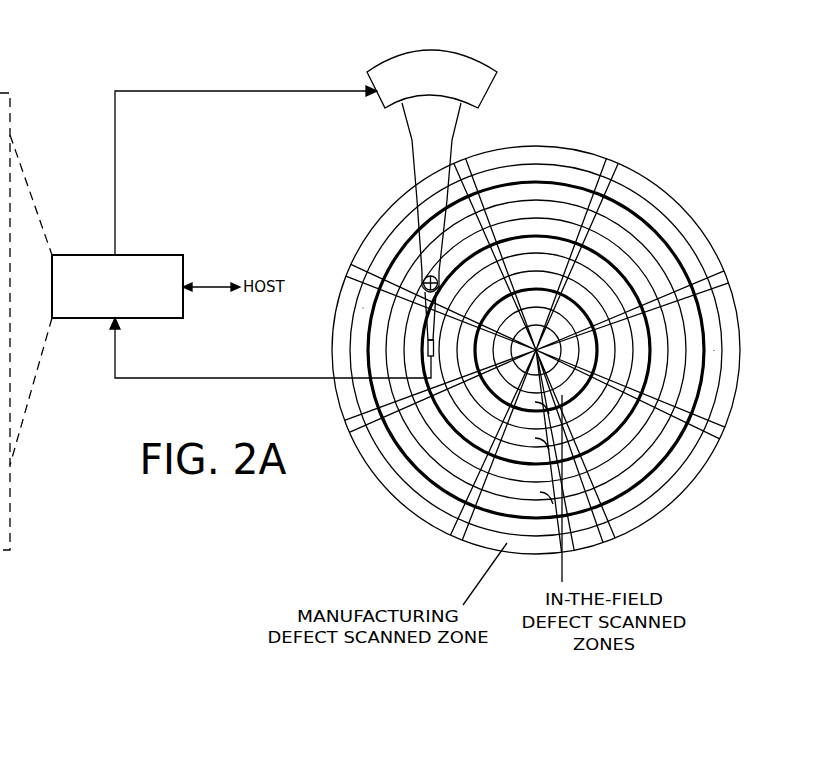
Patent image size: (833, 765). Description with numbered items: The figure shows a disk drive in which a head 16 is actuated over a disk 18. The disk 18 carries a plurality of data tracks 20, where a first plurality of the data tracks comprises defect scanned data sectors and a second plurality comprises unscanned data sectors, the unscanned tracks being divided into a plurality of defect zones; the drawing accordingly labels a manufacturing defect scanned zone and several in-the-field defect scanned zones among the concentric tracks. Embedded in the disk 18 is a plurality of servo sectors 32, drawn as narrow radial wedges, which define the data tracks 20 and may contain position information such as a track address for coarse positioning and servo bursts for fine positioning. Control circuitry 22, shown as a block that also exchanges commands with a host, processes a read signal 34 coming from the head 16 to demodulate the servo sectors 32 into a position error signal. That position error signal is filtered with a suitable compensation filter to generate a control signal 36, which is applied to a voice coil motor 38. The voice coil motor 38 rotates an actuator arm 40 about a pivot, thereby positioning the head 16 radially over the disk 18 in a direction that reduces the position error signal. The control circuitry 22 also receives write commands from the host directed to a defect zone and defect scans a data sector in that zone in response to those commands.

The head 16 is at (424, 354).
The disk 18 is at (672, 195).
The data tracks 20 is at (535, 178).
The control circuitry 22 is at (150, 255).
The servo sectors 32 is at (632, 555).
The read signal 34 is at (240, 381).
The control signal 36 is at (115, 162).
The voice coil motor 38 is at (378, 100).
The actuator arm 40 is at (416, 172).